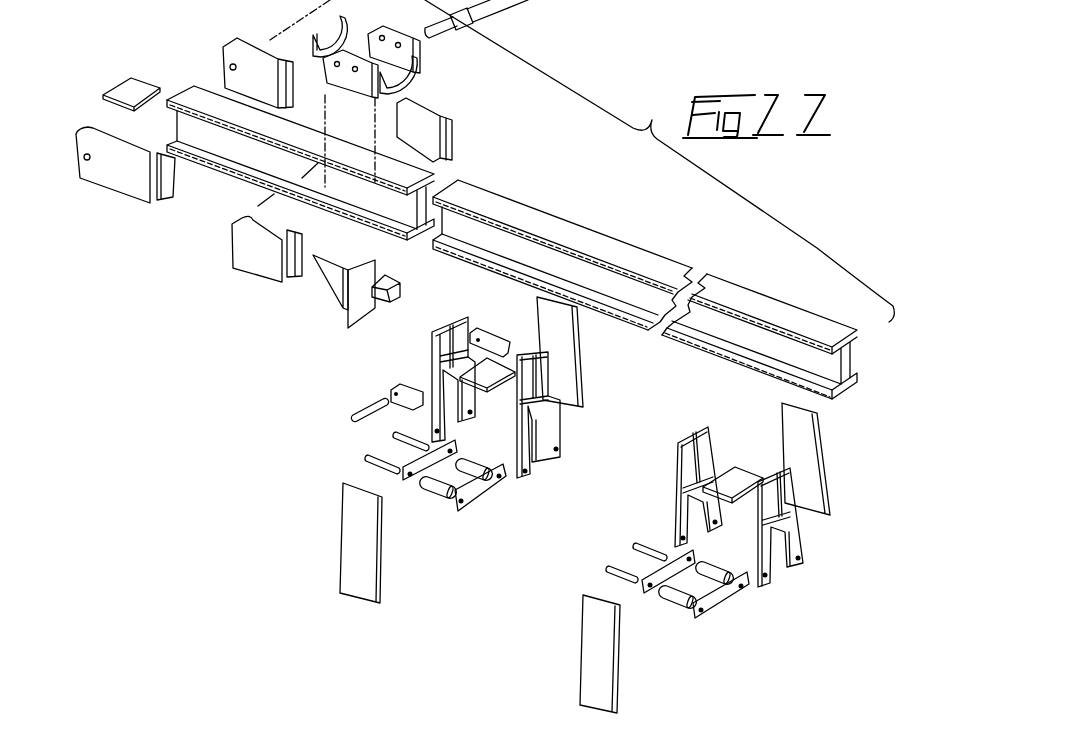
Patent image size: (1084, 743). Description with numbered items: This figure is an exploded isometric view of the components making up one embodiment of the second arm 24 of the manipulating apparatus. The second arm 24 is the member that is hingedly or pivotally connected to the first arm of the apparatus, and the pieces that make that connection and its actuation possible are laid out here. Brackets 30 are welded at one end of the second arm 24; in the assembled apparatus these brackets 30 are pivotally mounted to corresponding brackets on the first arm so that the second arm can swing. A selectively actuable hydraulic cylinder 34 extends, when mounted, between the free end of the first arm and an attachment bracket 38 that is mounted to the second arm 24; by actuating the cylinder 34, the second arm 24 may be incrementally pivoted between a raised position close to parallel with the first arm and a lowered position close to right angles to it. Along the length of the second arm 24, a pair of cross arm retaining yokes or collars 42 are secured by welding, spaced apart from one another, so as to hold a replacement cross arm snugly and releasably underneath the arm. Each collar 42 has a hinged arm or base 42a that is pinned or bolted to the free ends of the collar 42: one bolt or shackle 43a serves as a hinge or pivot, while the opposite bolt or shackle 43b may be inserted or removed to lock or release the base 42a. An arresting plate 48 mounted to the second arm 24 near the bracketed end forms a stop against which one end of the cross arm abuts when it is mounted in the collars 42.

The second arm 24 is at (580, 238).
The brackets 30 is at (115, 173).
The hydraulic cylinder 34 is at (543, 0).
The attachment bracket 38 is at (400, 45).
The cross arm retaining collars 42 is at (577, 434).
The hinged base 42a is at (483, 503).
The bolt or shackle 43a is at (655, 540).
The bolt or shackle 43b is at (609, 567).
The arresting plate 48 is at (363, 307).